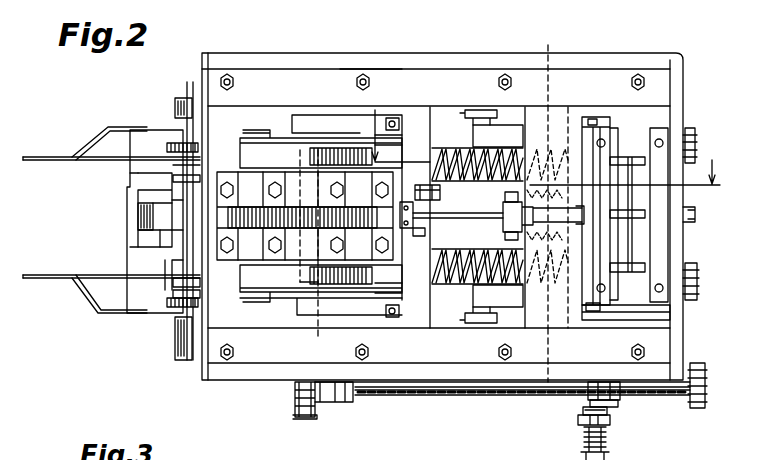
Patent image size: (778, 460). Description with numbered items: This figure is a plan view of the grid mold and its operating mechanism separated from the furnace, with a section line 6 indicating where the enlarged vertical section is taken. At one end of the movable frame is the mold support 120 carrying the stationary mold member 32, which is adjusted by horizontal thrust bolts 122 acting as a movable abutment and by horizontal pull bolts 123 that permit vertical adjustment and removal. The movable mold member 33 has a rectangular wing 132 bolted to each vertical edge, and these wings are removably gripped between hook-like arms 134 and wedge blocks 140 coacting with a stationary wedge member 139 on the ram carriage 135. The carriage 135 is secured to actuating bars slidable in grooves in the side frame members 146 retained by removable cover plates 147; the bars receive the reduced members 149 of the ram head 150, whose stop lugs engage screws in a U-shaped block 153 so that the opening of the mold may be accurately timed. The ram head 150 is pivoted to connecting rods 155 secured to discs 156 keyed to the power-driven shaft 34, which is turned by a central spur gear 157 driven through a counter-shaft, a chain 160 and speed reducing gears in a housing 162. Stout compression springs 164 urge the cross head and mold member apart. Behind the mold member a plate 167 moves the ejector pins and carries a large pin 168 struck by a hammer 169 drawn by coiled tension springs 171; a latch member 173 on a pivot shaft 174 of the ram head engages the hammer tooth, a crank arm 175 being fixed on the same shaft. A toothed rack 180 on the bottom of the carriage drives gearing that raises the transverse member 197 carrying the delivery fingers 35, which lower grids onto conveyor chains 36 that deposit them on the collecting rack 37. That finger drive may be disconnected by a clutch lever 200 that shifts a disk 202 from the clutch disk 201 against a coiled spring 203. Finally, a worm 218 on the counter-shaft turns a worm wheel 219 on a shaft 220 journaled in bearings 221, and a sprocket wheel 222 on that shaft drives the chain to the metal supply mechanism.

The section line 6— 6 is at (546, 139).
The stationary mold member 32 is at (660, 250).
The movable mold member 33 is at (604, 282).
The power-driven shaft 34 is at (318, 252).
The fingers 35 is at (620, 158).
The conveyor chains 36 is at (168, 142).
The collecting rack 37 is at (78, 162).
The mold support 120 is at (684, 92).
The horizontal thrust bolts 122 is at (696, 136).
The horizontal pull bolts 123 is at (698, 282).
The rectangular wing 132 is at (630, 118).
The hook-like arms 134 is at (622, 128).
The ram carriage 135 is at (582, 118).
The stationary wedge member 139 is at (600, 117).
The wedge blocks 140 is at (610, 118).
The side frame members 146 is at (345, 60).
The removable cover plates 147 is at (390, 80).
The reduced members 149 is at (436, 118).
The ram head 150 is at (415, 118).
The U-shaped block 153 is at (476, 118).
The connecting rods 155 is at (288, 138).
The discs 156 is at (250, 130).
The central spur gear 157 is at (228, 212).
The chain 160 is at (170, 315).
The housing 162 is at (128, 235).
The compression springs 164 is at (500, 118).
The plate 167 is at (590, 310).
The large pin 168 is at (496, 283).
The hammer 169 is at (488, 310).
The coiled tension springs 171 is at (547, 178).
The latch member 173 is at (478, 213).
The pivot shaft 174 is at (430, 240).
The crank arm 175 is at (420, 185).
The toothed rack 180 is at (528, 344).
The transverse member 197 is at (695, 221).
The clutch lever 200 is at (612, 420).
The clutch disk 201 is at (588, 404).
The disk 202 is at (584, 412).
The coiled spring 203 is at (608, 450).
The worm 218 is at (294, 400).
The worm wheel 219 is at (316, 416).
The shaft 220 is at (428, 398).
The bearings 221 is at (620, 398).
The sprocket wheel 222 is at (706, 386).